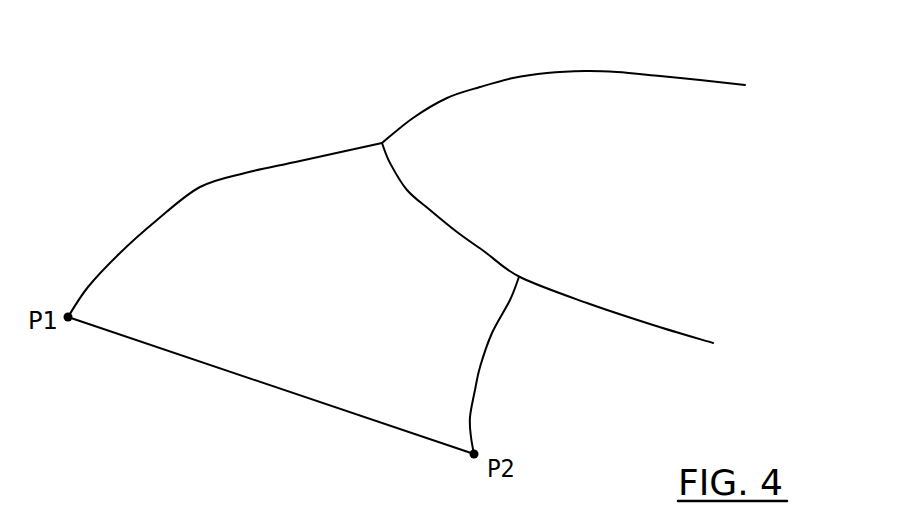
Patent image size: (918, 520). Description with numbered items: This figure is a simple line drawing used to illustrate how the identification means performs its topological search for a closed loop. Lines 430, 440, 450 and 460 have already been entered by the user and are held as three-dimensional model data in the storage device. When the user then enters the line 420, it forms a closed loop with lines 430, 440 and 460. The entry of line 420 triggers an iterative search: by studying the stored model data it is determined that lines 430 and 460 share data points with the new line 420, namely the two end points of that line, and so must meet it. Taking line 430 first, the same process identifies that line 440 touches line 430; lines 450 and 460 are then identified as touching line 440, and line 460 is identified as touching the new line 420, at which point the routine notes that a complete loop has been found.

The line 420 is at (255, 380).
The line 430 is at (477, 392).
The line 440 is at (457, 232).
The line 450 is at (617, 72).
The line 460 is at (230, 185).